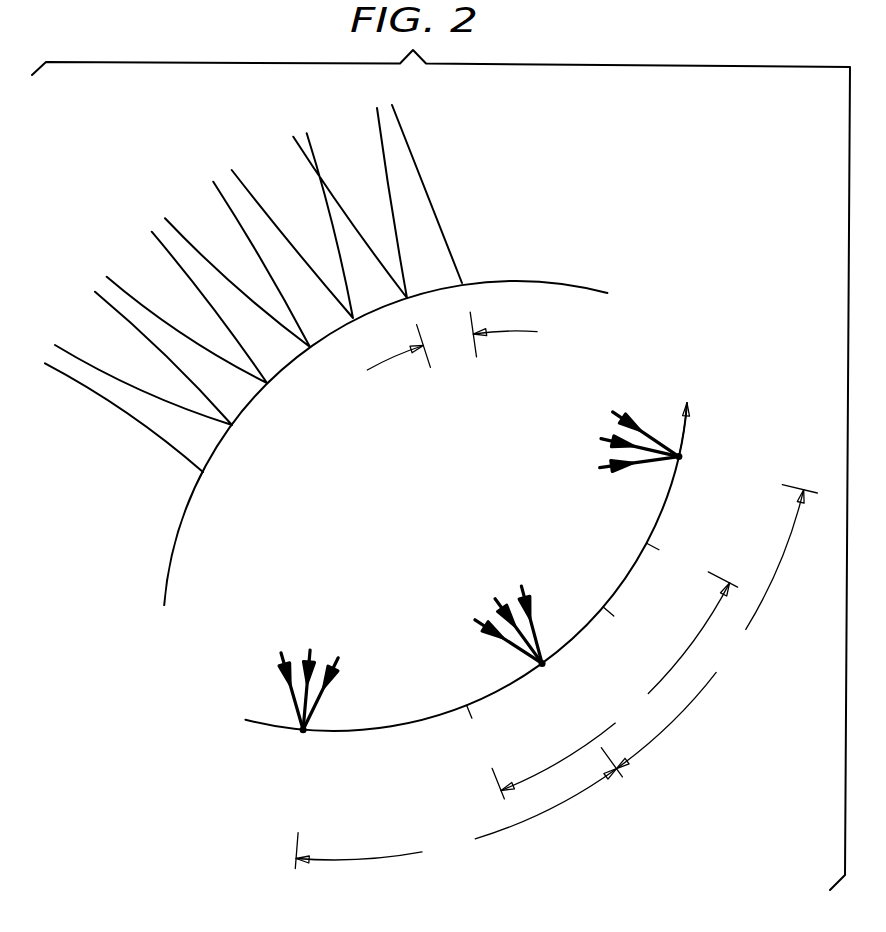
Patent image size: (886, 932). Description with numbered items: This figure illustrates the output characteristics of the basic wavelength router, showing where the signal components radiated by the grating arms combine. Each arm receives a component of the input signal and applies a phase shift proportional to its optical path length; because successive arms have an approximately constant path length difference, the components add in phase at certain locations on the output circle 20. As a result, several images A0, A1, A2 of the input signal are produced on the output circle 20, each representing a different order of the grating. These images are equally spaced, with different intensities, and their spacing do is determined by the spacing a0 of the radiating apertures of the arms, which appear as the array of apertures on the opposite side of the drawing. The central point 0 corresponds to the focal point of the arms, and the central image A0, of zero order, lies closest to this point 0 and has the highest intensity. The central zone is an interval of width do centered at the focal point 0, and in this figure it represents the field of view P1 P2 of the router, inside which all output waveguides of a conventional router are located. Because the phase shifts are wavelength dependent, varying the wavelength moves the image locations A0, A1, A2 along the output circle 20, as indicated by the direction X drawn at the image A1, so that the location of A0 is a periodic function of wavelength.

The output circle 20 is at (365, 731).
The central point O 0 is at (617, 621).
The central image of zero order A0 is at (521, 645).
The first higher-order image A1 is at (656, 449).
The second higher-order image A2 is at (308, 714).
The field of view boundary point P1 is at (481, 733).
The field of view boundary point P2 is at (669, 561).
The X direction X is at (698, 426).
The spacing of the arms' radiating apertures a0 is at (452, 341).
The image spacing do is at (556, 677).